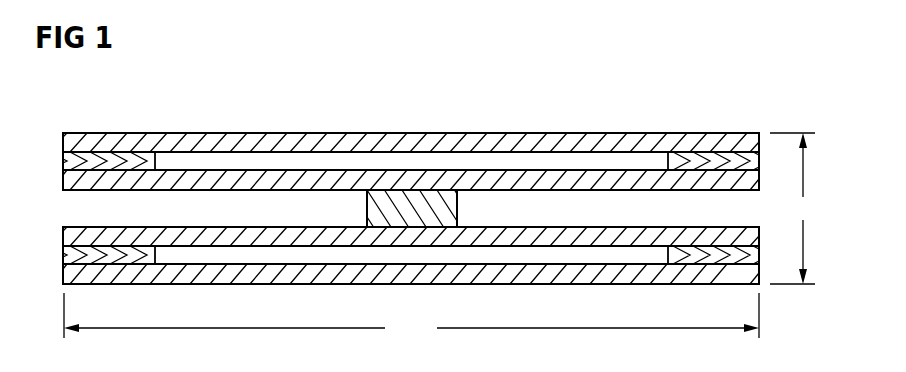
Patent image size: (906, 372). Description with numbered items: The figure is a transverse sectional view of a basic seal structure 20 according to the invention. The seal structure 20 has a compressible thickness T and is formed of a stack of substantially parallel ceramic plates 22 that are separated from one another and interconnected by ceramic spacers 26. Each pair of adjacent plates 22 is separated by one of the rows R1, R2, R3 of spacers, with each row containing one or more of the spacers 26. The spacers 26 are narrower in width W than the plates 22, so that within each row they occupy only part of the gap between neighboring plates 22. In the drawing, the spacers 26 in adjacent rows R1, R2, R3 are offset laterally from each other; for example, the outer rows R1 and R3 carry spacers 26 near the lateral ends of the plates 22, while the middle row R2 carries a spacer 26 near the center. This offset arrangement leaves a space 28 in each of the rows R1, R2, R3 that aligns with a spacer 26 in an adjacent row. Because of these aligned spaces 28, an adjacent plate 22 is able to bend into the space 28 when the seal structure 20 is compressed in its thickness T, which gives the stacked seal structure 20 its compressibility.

The seal structure 20 is at (250, 93).
The ceramic plates 22 is at (573, 273).
The ceramic spacers 26 is at (415, 203).
The space 28 is at (340, 208).
The first row of spacers R1 is at (63, 162).
The second row of spacers R2 is at (67, 208).
The third row of spacers R3 is at (63, 257).
The compressible thickness T is at (792, 208).
The width W is at (411, 317).